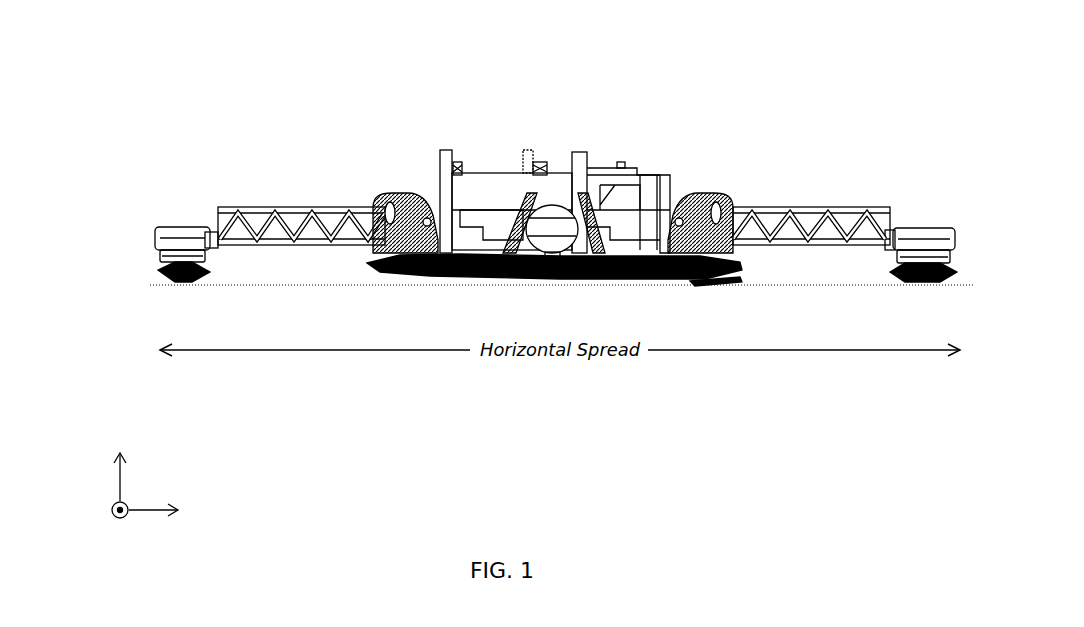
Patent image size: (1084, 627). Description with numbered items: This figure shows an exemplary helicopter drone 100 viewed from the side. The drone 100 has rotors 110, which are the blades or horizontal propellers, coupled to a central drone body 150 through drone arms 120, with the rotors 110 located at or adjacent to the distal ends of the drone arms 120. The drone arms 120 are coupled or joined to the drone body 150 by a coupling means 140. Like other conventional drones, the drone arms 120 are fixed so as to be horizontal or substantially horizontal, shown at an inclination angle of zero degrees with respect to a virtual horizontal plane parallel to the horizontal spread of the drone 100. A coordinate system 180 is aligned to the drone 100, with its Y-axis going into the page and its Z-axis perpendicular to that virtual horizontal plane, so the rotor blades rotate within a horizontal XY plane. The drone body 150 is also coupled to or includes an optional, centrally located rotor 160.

The helicopter drone 100 is at (536, 165).
The rotors 110 is at (190, 278).
The drone arms 120 is at (230, 207).
The coupling means 140 is at (405, 190).
The drone body 150 is at (442, 152).
The central rotor 160 is at (650, 282).
The coordinate system 180 is at (123, 464).